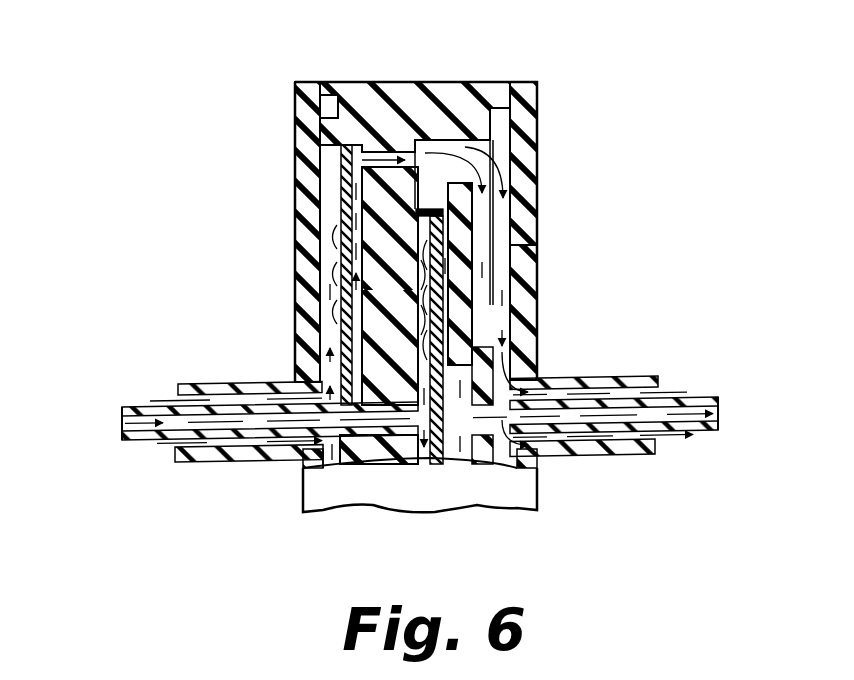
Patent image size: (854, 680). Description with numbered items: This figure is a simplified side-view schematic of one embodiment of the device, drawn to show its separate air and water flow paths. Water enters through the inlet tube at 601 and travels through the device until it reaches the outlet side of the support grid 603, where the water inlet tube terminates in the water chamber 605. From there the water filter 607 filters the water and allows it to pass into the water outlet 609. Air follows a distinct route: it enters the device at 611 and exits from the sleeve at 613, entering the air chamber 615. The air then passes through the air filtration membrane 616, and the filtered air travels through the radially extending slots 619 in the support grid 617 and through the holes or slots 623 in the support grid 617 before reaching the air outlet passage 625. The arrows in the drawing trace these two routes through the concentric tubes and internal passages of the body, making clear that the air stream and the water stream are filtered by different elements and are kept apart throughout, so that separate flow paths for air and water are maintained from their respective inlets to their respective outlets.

The inlet tube 601 is at (105, 412).
The support grid 603 is at (415, 193).
The water chamber 605 is at (437, 328).
The water filter 607 is at (440, 345).
The water outlet 609 is at (722, 416).
The air inlet 611 is at (170, 390).
The sleeve exit 613 is at (330, 377).
The air chamber 615 is at (333, 183).
The air filtration membrane 616 is at (340, 232).
The support grid 617 is at (380, 180).
The radially extending slots 619 is at (347, 177).
The holes or slots 623 is at (403, 150).
The air outlet passage 625 is at (693, 394).